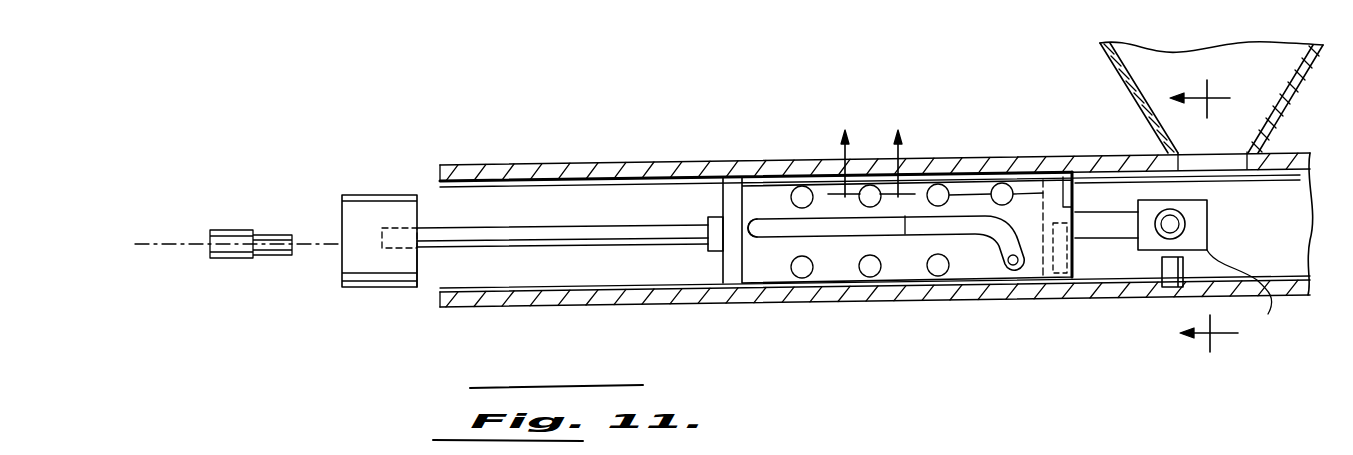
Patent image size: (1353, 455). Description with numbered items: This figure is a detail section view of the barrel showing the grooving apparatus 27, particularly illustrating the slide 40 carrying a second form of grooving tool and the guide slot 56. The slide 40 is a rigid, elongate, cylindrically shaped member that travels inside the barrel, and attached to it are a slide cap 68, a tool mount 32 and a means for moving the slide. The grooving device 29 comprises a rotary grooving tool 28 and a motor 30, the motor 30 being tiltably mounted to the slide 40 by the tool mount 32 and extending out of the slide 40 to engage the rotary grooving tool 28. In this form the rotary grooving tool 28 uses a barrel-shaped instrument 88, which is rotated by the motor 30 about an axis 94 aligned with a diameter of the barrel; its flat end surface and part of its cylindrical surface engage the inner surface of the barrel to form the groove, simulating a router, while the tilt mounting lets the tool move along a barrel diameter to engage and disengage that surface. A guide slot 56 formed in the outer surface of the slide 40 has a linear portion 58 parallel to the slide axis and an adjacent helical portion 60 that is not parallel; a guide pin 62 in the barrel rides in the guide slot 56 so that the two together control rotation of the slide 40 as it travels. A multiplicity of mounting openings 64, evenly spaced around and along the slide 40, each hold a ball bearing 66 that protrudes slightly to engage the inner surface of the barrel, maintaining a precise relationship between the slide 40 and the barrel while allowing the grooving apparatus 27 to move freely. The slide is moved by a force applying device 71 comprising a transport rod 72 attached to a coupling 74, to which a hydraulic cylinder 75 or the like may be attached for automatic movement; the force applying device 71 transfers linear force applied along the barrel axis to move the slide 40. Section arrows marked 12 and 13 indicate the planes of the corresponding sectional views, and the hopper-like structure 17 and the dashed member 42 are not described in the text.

The section line 12- 12 is at (1190, 353).
The section line 13- 13 is at (871, 153).
The hopper 17 is at (1124, 92).
The grooving apparatus 27 is at (913, 279).
The rotary grooving tool 28 is at (1247, 293).
The grooving device 29 is at (1118, 247).
The motor 30 is at (1105, 240).
The tool mount 32 is at (1060, 283).
The slide 40 is at (994, 160).
The guide member 42 is at (1035, 300).
The guide slot 56 is at (830, 217).
The linear portion 58 is at (912, 218).
The helical portion 60 is at (1008, 278).
The guide pin 62 is at (760, 222).
The mounting openings 64 is at (862, 277).
The ball bearings 66 is at (955, 258).
The slide cap 68 is at (708, 207).
The force applying device 71 is at (430, 260).
The transport rod 72 is at (495, 227).
The coupling 74 is at (342, 208).
The hydraulic cylinder 75 is at (234, 243).
The barrel-shaped instrument 88 is at (1160, 270).
The axis of rotation 94 is at (1207, 242).